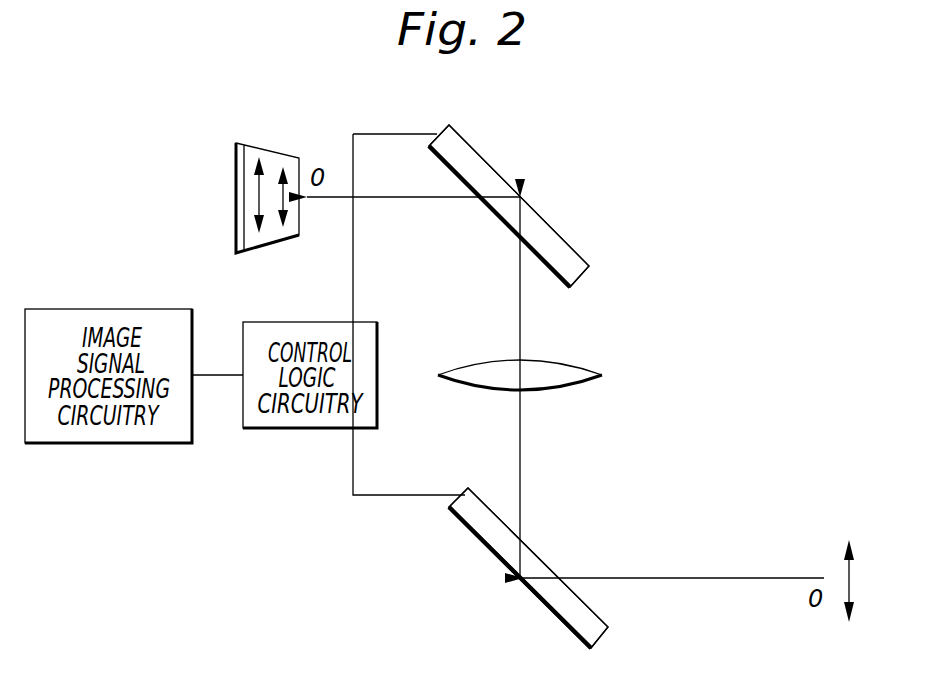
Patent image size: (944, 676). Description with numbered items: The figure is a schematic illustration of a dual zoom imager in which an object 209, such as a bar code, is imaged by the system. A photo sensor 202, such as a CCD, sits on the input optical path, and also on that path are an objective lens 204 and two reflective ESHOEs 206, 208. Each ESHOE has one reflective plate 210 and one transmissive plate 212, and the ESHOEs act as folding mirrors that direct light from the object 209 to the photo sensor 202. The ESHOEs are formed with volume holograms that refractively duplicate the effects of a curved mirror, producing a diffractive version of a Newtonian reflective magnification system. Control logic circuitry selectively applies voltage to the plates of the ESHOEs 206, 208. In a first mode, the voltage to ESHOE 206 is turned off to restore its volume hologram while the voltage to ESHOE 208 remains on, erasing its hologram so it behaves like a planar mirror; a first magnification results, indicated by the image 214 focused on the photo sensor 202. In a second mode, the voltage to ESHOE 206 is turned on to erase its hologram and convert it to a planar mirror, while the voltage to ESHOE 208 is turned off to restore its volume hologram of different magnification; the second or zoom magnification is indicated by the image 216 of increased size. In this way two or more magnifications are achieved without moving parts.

The photo sensor 202 is at (268, 148).
The objective lens 204 is at (602, 375).
The reflective ESHOE 206 is at (589, 266).
The reflective ESHOE 208 is at (608, 627).
The object 209 is at (852, 535).
The reflective plate 210 is at (482, 155).
The transmissive plate 212 is at (503, 221).
The image 214 is at (284, 198).
The image 216 is at (260, 196).